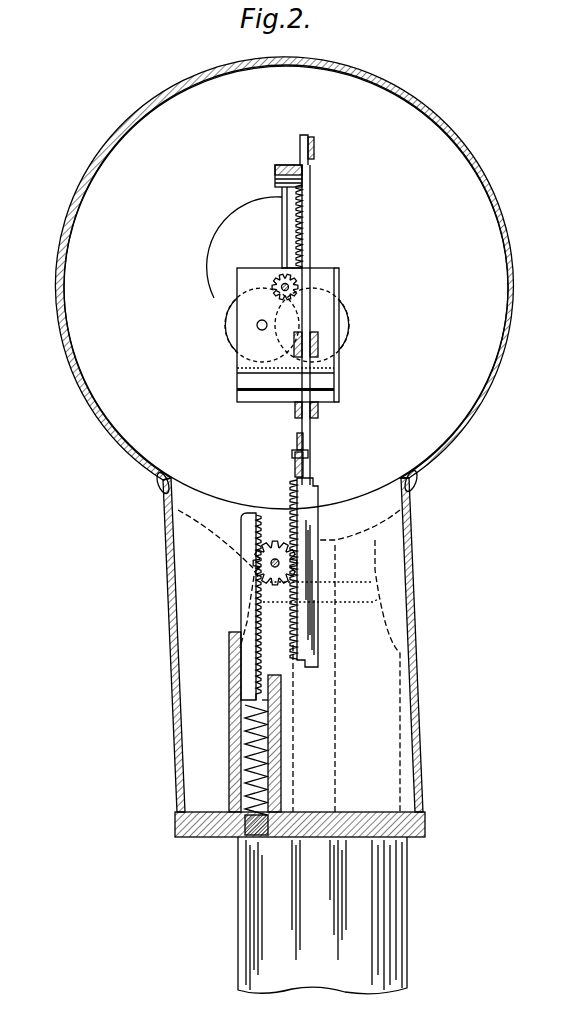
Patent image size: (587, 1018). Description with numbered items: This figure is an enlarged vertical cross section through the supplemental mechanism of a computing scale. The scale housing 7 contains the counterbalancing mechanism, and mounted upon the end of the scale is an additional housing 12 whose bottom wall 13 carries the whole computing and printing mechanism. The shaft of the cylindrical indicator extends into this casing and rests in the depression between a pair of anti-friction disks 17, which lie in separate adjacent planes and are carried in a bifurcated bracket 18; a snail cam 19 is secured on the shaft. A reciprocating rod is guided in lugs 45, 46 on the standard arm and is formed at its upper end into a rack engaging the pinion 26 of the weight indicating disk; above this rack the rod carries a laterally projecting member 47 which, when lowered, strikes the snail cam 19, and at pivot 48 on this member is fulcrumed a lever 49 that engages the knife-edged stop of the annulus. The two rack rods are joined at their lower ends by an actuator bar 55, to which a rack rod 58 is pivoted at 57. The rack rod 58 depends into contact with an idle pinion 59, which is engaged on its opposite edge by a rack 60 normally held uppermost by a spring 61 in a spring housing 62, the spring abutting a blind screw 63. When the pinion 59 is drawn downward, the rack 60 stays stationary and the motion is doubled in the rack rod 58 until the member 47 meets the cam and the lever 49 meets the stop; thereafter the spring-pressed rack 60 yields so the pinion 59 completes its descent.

The housing 7 is at (405, 902).
The additional housing 12 is at (474, 163).
The bottom wall 13 is at (412, 830).
The anti-friction disks 17 is at (228, 345).
The bifurcated bracket 18 is at (247, 385).
The snail cam 19 is at (206, 248).
The pinion 26 is at (283, 278).
The lug 45 is at (319, 346).
The lug 46 is at (296, 240).
The laterally projecting member 47 is at (282, 165).
The pivot 48 is at (300, 143).
The lever 49 is at (315, 144).
The actuator bar 55 is at (297, 442).
The pivot 57 is at (294, 456).
The rack rod 58 is at (314, 492).
The idle pinion 59 is at (268, 568).
The rack 60 is at (240, 560).
The spring 61 is at (232, 766).
The spring housing 62 is at (236, 784).
The blind screw 63 is at (240, 838).